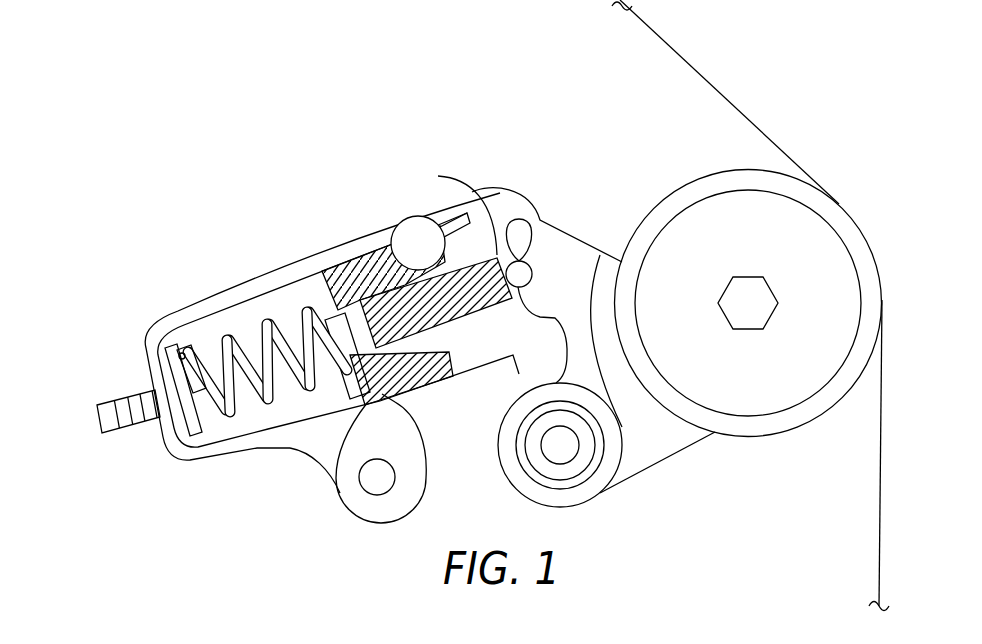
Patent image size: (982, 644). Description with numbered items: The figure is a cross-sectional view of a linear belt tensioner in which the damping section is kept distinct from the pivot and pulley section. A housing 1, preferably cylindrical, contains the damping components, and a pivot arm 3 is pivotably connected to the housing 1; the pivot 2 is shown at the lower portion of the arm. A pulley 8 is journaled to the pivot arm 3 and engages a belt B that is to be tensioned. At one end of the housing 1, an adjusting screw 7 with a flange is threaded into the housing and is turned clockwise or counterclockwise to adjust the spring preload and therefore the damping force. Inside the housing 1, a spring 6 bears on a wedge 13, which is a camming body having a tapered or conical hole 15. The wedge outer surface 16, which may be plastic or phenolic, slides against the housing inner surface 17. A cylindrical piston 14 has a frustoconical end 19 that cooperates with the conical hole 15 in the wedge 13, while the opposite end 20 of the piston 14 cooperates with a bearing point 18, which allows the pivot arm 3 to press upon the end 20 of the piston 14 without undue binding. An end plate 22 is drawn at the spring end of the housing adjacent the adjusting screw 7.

The housing 1 is at (250, 272).
The pivot 2 is at (568, 475).
The pivot arm 3 is at (560, 258).
The spring 6 is at (230, 428).
The adjusting screw 7 is at (98, 404).
The pulley 8 is at (764, 430).
The wedge 13 is at (358, 270).
The piston 14 is at (466, 312).
The conical hole 15 is at (412, 216).
The wedge outer surface 16 is at (333, 480).
The housing inner surface 17 is at (283, 425).
The bearing point 18 is at (533, 208).
The end of piston 19 is at (401, 378).
The end of piston 20 is at (448, 210).
The end plate 22 is at (166, 352).
The belt B is at (698, 72).